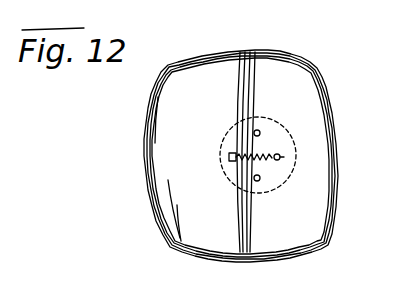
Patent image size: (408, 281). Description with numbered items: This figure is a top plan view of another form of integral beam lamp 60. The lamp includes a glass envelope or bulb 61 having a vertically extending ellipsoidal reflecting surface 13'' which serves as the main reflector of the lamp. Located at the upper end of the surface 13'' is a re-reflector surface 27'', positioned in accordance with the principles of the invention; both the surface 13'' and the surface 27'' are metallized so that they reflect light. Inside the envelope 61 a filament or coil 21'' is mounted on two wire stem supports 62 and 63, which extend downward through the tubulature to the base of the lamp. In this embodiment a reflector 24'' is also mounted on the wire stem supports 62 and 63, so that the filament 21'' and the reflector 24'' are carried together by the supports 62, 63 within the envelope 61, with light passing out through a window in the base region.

The integral beam lamp 60 is at (310, 50).
The glass envelope or bulb 61 is at (139, 116).
The ellipsoidal reflecting surface 13'' is at (136, 169).
The re-reflector surface 27'' is at (309, 152).
The filament or coil 21'' is at (299, 151).
The reflector 24'' is at (220, 139).
The wire stem support 62 is at (233, 160).
The wire stem support 63 is at (279, 162).